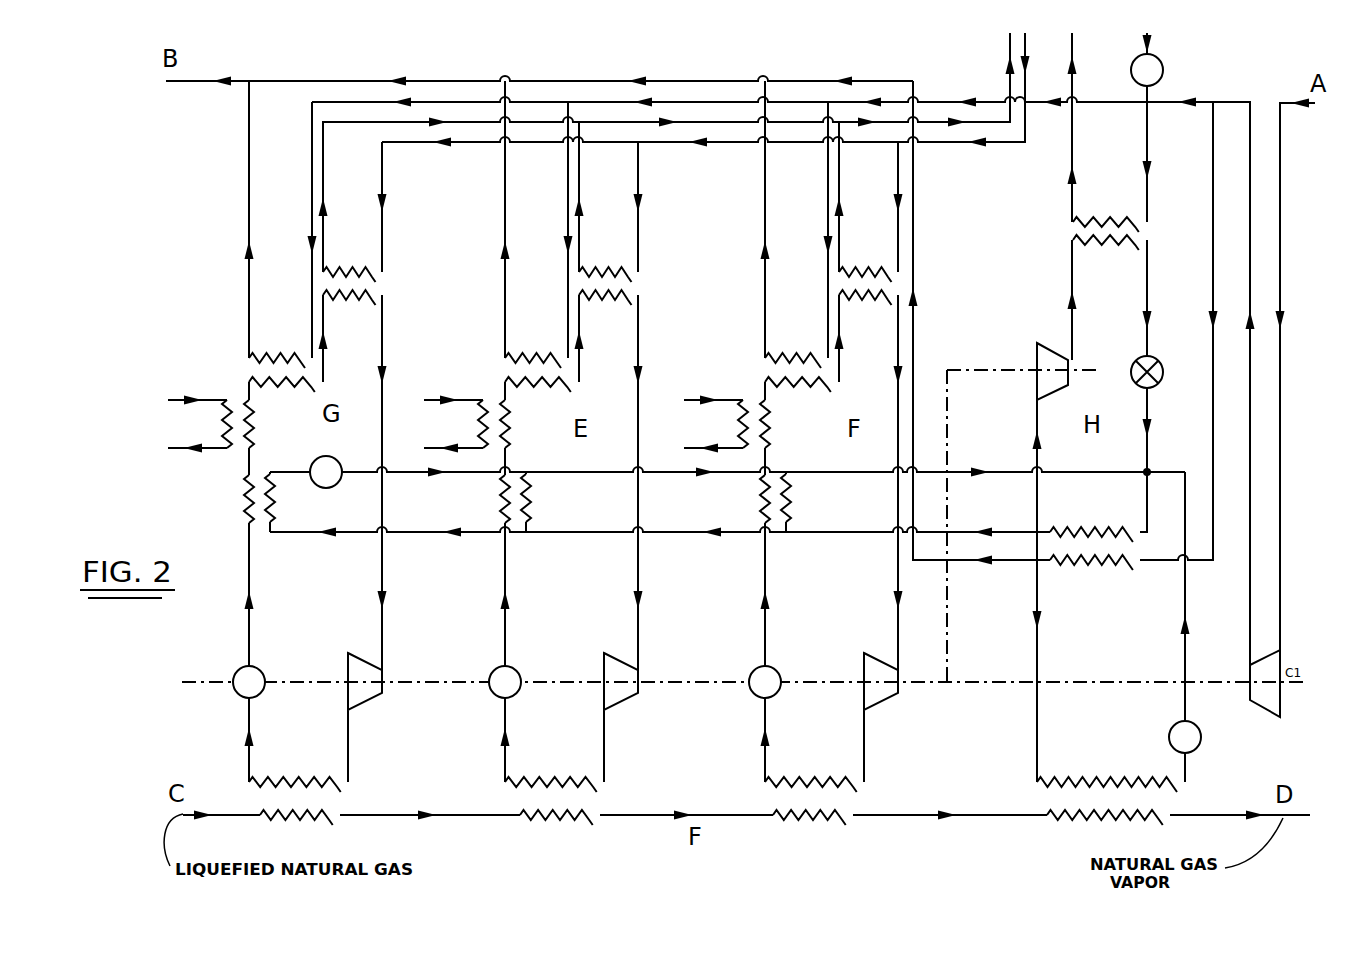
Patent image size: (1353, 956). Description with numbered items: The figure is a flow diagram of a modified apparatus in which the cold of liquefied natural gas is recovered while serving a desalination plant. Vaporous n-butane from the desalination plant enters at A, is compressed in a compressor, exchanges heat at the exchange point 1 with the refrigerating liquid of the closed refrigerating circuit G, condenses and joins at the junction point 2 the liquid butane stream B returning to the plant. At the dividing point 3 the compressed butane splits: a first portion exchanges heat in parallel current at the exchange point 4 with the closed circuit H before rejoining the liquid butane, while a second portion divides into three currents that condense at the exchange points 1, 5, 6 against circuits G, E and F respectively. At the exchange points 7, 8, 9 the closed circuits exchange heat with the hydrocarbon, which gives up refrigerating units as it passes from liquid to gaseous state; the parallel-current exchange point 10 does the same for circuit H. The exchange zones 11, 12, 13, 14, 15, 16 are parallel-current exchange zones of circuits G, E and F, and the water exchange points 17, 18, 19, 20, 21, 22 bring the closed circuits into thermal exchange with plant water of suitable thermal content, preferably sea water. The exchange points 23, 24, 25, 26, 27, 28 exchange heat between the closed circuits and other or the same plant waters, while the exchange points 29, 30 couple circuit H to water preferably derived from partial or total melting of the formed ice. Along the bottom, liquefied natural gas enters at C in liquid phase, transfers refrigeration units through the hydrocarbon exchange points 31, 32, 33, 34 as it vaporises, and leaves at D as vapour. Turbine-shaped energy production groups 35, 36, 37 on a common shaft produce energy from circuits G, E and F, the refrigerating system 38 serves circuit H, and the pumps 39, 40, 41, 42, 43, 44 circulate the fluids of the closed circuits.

The thermal exchange point 1 is at (281, 224).
The junction point 2 is at (539, 65).
The dividing point 3 is at (783, 368).
The thermal exchange point 4 is at (1063, 337).
The thermal exchange point 5 is at (537, 224).
The thermal exchange point 6 is at (797, 224).
The thermal exchange point 7 is at (295, 768).
The thermal exchange point 8 is at (551, 770).
The thermal exchange point 9 is at (811, 771).
The parallel-current thermal exchange point 10 is at (1107, 771).
The thermal exchange zone 11 is at (230, 570).
The thermal exchange zone 12 is at (285, 502).
The thermal exchange zone 13 is at (488, 570).
The thermal exchange zone 14 is at (541, 502).
The thermal exchange zone 15 is at (745, 570).
The thermal exchange zone 16 is at (802, 502).
The water thermal exchange point 17 is at (200, 424).
The water thermal exchange point 18 is at (279, 426).
The water thermal exchange point 19 is at (456, 424).
The water thermal exchange point 20 is at (535, 426).
The water thermal exchange point 21 is at (716, 424).
The water thermal exchange point 22 is at (795, 426).
The water thermal exchange point 23 is at (353, 202).
The water thermal exchange point 24 is at (353, 381).
The water thermal exchange point 25 is at (609, 202).
The water thermal exchange point 26 is at (609, 381).
The water thermal exchange point 27 is at (869, 202).
The water thermal exchange point 28 is at (869, 381).
The melt-water thermal exchange point 29 is at (1103, 132).
The melt-water thermal exchange point 30 is at (1110, 353).
The hydrocarbon thermal exchange point 31 is at (296, 829).
The hydrocarbon thermal exchange point 32 is at (556, 830).
The hydrocarbon thermal exchange point 33 is at (809, 833).
The hydrocarbon thermal exchange point 34 is at (1105, 832).
The energy production group 35 is at (361, 627).
The energy production group 36 is at (640, 627).
The energy production group 37 is at (876, 627).
The refrigerating system 38 is at (1039, 546).
The pump 39 is at (230, 711).
The pump 40 is at (339, 459).
The pump 41 is at (516, 708).
The pump 42 is at (776, 711).
The pump 43 is at (1132, 127).
The pump 44 is at (1201, 627).